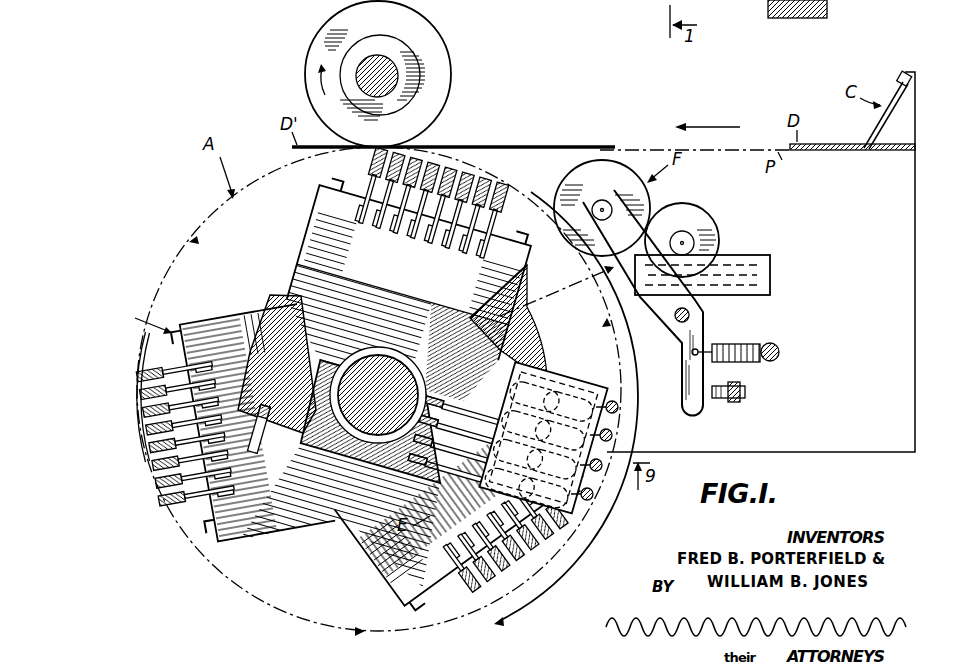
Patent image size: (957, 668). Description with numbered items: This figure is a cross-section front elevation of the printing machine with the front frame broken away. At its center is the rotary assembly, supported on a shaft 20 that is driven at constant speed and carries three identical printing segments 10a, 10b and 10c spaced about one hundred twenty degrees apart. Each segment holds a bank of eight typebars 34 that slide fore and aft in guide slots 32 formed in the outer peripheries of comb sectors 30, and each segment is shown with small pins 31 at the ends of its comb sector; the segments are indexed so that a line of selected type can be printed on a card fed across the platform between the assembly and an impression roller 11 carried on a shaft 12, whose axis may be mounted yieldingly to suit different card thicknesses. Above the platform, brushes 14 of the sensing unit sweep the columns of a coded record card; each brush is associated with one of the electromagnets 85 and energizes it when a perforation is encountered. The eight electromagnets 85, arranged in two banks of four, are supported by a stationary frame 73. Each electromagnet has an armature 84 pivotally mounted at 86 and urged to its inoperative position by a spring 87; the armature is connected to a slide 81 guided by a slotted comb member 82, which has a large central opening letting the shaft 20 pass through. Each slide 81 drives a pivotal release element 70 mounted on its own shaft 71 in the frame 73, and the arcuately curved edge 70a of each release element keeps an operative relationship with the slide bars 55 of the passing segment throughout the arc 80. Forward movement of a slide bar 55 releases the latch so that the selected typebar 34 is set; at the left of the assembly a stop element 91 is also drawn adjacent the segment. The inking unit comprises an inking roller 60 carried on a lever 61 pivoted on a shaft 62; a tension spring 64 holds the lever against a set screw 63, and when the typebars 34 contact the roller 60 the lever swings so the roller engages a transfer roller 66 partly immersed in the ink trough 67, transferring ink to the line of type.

The printing segment 10a is at (306, 232).
The printing segment 10b is at (460, 594).
The printing segment 10c is at (217, 326).
The impression roller 11 is at (428, 36).
The shaft 12 is at (405, 68).
The brushes 14 is at (876, 130).
The shaft 20 is at (384, 367).
The comb sectors 30 is at (488, 249).
The locating pin 31 is at (333, 190).
The guide slots 32 is at (375, 197).
The typebars 34 is at (467, 195).
The slide bars 55 is at (444, 232).
The inking roller 60 is at (574, 175).
The lever 61 is at (663, 320).
The shaft 62 is at (690, 315).
The set screw 63 is at (733, 400).
The tension spring 64 is at (762, 361).
The transfer roller 66 is at (691, 207).
The ink trough 67 is at (751, 255).
The release elements 70 is at (378, 292).
The arcuately curved edge 70a is at (545, 339).
The shafts 71 is at (258, 456).
The stationary frame 73 is at (256, 296).
The arc 80 is at (596, 541).
The slides 81 is at (441, 360).
The slotted comb member 82 is at (318, 445).
The armature 84 is at (485, 356).
The electromagnets 85 is at (572, 382).
The pivot 86 is at (517, 0).
The spring 87 is at (617, 0).
The stop 91 is at (153, 333).